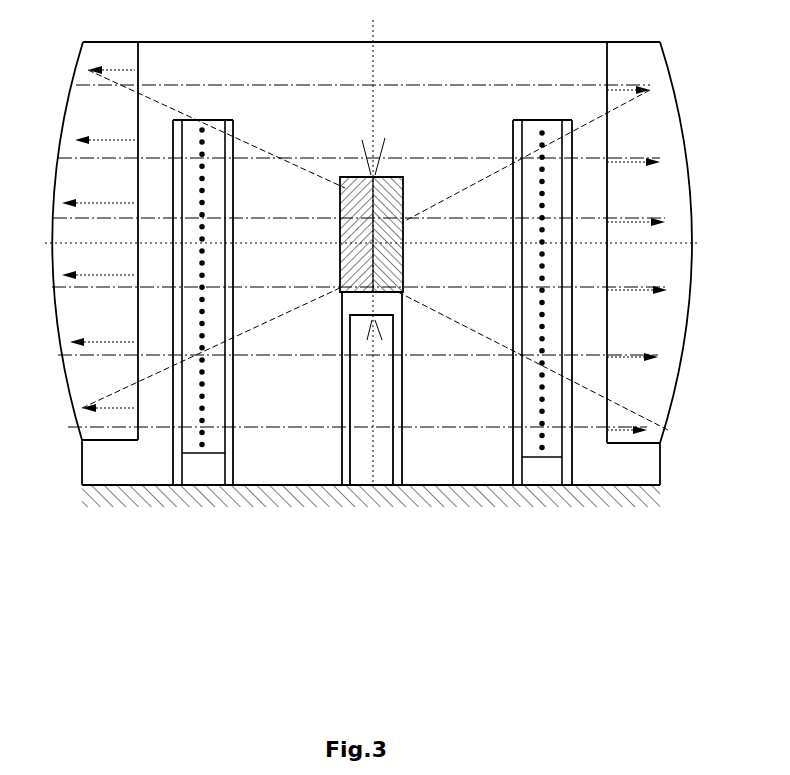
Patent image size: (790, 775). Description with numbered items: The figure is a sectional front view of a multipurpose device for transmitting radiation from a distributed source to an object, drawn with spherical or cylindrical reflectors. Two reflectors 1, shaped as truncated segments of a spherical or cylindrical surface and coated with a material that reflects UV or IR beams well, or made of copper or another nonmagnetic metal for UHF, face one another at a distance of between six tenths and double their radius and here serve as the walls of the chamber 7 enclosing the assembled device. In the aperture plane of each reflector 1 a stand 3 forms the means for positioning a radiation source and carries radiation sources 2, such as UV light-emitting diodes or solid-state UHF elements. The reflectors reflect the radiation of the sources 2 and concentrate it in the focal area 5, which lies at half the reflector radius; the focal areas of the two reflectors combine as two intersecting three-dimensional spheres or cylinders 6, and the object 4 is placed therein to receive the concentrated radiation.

The reflector 1 is at (109, 433).
The radiation source 2 is at (212, 443).
The means for positioning a radiation source 3 is at (178, 473).
The object 4 is at (403, 203).
The focal area 5 is at (345, 485).
The intersecting three-dimensional spheres or cylinders 6 is at (396, 294).
The chamber 7 is at (597, 487).